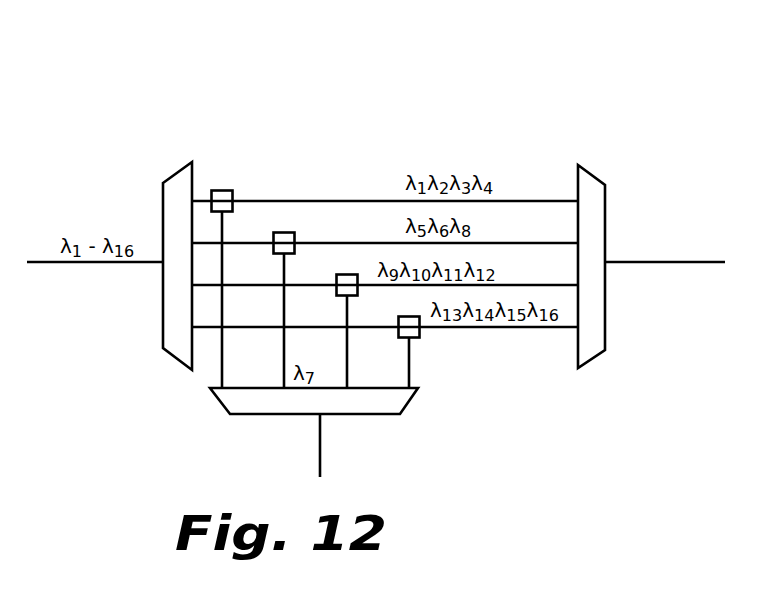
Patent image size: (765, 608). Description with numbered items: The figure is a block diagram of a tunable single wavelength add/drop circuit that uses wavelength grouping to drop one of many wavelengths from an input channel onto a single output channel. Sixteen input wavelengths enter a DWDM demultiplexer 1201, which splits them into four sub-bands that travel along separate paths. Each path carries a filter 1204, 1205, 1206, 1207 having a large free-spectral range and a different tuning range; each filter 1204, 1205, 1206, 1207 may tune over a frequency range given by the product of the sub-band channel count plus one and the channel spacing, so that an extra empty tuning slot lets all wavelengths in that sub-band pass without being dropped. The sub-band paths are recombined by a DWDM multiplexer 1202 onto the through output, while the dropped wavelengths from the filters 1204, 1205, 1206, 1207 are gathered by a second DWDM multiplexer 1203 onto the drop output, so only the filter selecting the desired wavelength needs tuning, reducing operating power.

The demultiplexer 1201 is at (173, 180).
The DWDM multiplexer 1202 is at (592, 172).
The DWDM multiplexer 1203 is at (380, 415).
The filter 1204 is at (223, 190).
The filter 1205 is at (284, 232).
The filter 1206 is at (347, 274).
The filter 1207 is at (420, 337).